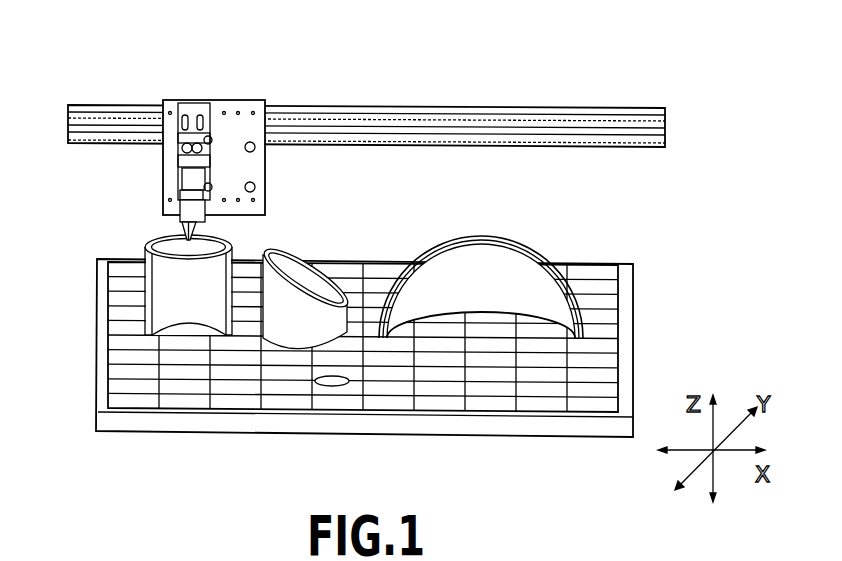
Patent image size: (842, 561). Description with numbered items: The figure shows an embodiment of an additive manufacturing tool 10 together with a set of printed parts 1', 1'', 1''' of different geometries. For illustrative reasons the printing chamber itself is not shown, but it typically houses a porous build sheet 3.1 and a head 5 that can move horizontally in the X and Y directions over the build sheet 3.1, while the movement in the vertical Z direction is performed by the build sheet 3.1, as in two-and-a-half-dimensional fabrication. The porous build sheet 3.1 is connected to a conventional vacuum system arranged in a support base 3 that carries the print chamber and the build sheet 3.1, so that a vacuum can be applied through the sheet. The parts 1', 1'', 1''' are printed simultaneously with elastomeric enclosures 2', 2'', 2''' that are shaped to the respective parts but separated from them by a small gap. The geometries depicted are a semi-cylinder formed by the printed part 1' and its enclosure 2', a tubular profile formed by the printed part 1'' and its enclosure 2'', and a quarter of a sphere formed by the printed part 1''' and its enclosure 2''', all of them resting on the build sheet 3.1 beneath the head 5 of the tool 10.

The printed part 1' is at (130, 261).
The elastomeric enclosure 2' is at (126, 293).
The printed part 1'' is at (308, 247).
The elastomeric enclosure 2'' is at (272, 366).
The printed part 1''' is at (481, 258).
The elastomeric enclosure 2''' is at (523, 265).
The support base 3 is at (632, 373).
The build sheet 3.1 is at (592, 365).
The head 5 is at (227, 177).
The additive manufacturing tool 10 is at (458, 95).